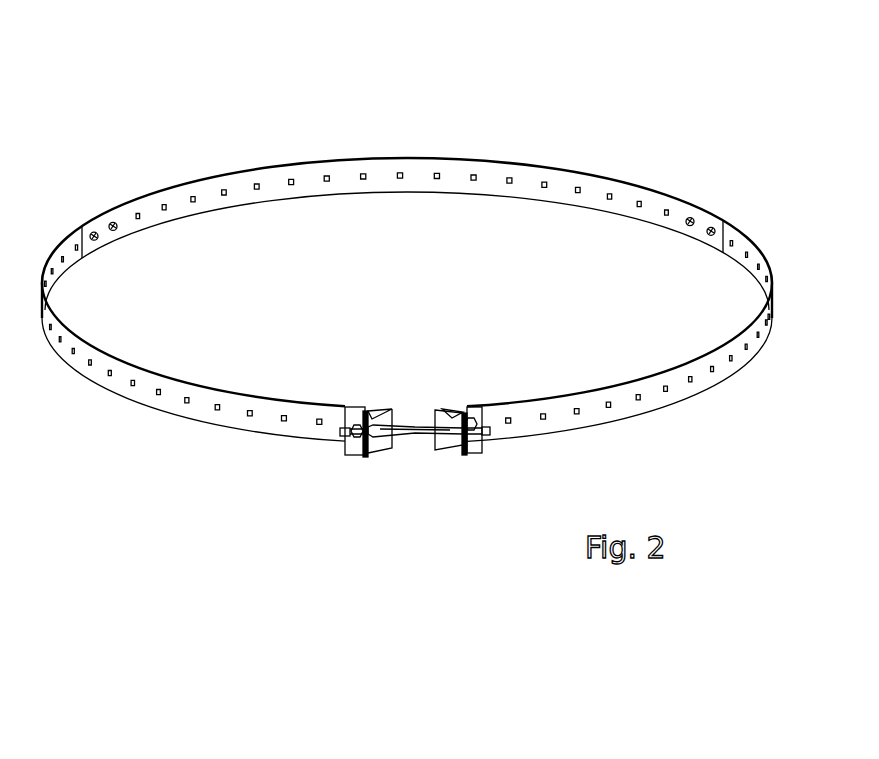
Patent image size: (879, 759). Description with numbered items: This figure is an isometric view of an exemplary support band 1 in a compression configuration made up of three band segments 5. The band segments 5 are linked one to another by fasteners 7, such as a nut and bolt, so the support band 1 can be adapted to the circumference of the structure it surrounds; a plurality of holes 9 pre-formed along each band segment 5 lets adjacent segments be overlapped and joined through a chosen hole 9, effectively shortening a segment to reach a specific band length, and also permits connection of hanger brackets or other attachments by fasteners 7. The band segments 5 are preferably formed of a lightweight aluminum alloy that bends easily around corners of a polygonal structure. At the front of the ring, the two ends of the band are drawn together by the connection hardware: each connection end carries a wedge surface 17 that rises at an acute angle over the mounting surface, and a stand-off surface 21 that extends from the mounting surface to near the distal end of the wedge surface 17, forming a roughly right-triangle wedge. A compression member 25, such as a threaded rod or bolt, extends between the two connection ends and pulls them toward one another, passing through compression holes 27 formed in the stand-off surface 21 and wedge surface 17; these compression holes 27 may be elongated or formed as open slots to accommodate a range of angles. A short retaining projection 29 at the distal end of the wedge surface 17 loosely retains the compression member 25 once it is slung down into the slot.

The support band 1 is at (402, 293).
The band segment 5 is at (235, 183).
The fastener 7 is at (117, 230).
The hole 9 is at (437, 175).
The wedge surface 17 is at (380, 413).
The stand-off surface 21 is at (364, 408).
The compression member 25 is at (417, 422).
The compression hole 27 is at (368, 453).
The retaining projection 29 is at (462, 417).